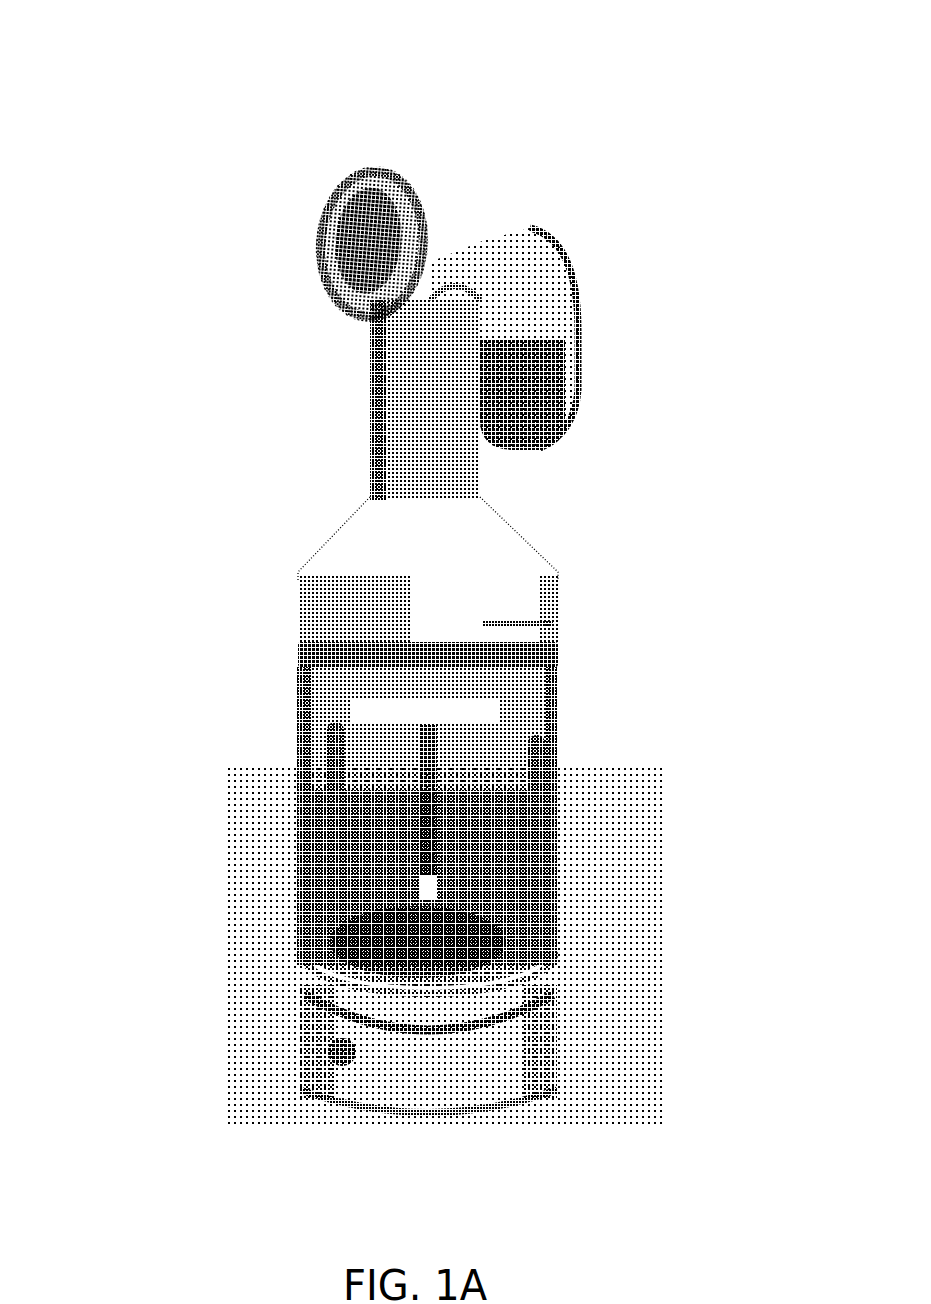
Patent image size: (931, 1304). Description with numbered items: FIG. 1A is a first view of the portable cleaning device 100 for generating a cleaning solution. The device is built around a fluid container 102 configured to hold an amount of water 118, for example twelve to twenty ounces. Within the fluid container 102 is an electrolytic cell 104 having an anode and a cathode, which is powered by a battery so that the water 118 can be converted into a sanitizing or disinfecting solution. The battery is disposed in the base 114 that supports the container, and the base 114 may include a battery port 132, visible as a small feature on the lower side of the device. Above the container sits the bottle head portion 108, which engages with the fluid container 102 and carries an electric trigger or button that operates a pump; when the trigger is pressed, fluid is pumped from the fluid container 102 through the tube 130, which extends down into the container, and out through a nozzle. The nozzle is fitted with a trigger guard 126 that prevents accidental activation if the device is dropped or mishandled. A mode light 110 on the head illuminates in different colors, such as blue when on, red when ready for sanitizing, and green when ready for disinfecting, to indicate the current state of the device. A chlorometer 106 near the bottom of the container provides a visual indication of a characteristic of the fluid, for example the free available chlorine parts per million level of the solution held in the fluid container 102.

The portable cleaning device 100 is at (316, 50).
The fluid container 102 is at (308, 738).
The electrolytic cell 104 is at (450, 943).
The chlorometer 106 is at (323, 958).
The bottle head portion 108 is at (358, 532).
The mode light 110 is at (338, 262).
The base 114 is at (310, 1070).
The water 118 is at (513, 817).
The trigger guard 126 is at (545, 386).
The tube 130 is at (423, 817).
The battery port 132 is at (338, 1062).